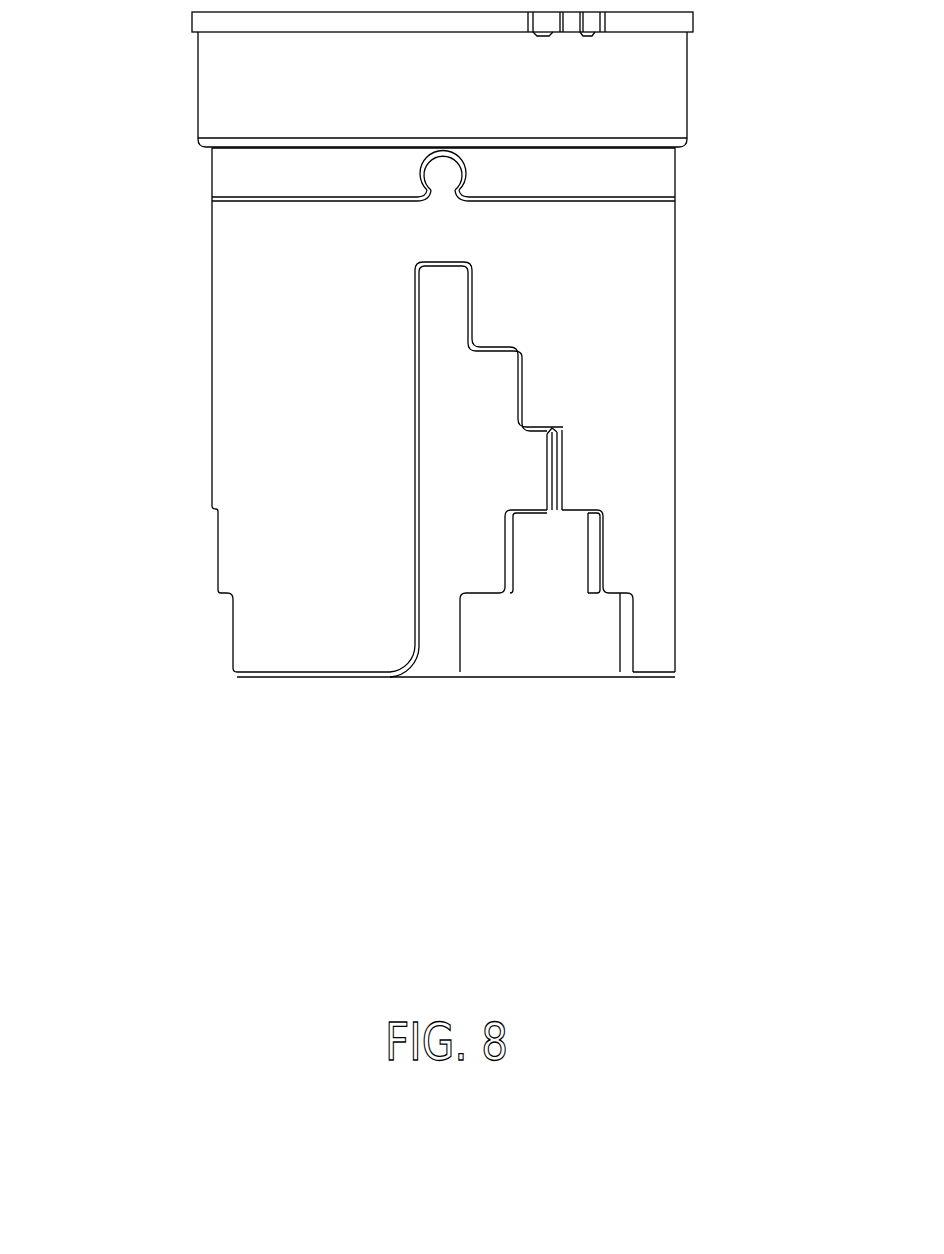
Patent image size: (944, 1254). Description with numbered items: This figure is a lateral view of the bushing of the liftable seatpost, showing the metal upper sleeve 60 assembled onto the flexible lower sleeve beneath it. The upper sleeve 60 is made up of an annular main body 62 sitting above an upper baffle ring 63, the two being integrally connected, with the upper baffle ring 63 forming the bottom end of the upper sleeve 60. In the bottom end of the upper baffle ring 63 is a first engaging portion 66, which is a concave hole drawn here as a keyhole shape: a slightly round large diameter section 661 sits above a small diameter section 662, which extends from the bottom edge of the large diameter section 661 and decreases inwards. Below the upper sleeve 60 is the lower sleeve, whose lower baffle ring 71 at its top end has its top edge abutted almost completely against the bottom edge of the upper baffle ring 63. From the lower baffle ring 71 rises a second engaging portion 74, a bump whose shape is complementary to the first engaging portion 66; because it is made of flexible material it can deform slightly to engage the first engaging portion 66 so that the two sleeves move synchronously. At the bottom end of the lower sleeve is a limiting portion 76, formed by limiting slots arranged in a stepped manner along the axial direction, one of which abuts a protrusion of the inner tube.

The upper sleeve 60 is at (75, 70).
The annular main body 62 is at (258, 79).
The upper baffle ring 63 is at (272, 170).
The first engaging portion 66 is at (822, 68).
The large diameter section 661 is at (467, 163).
The small diameter section 662 is at (465, 193).
The lower baffle ring 71 is at (445, 233).
The second engaging portion 74 is at (445, 180).
The limiting portion 76 is at (582, 473).